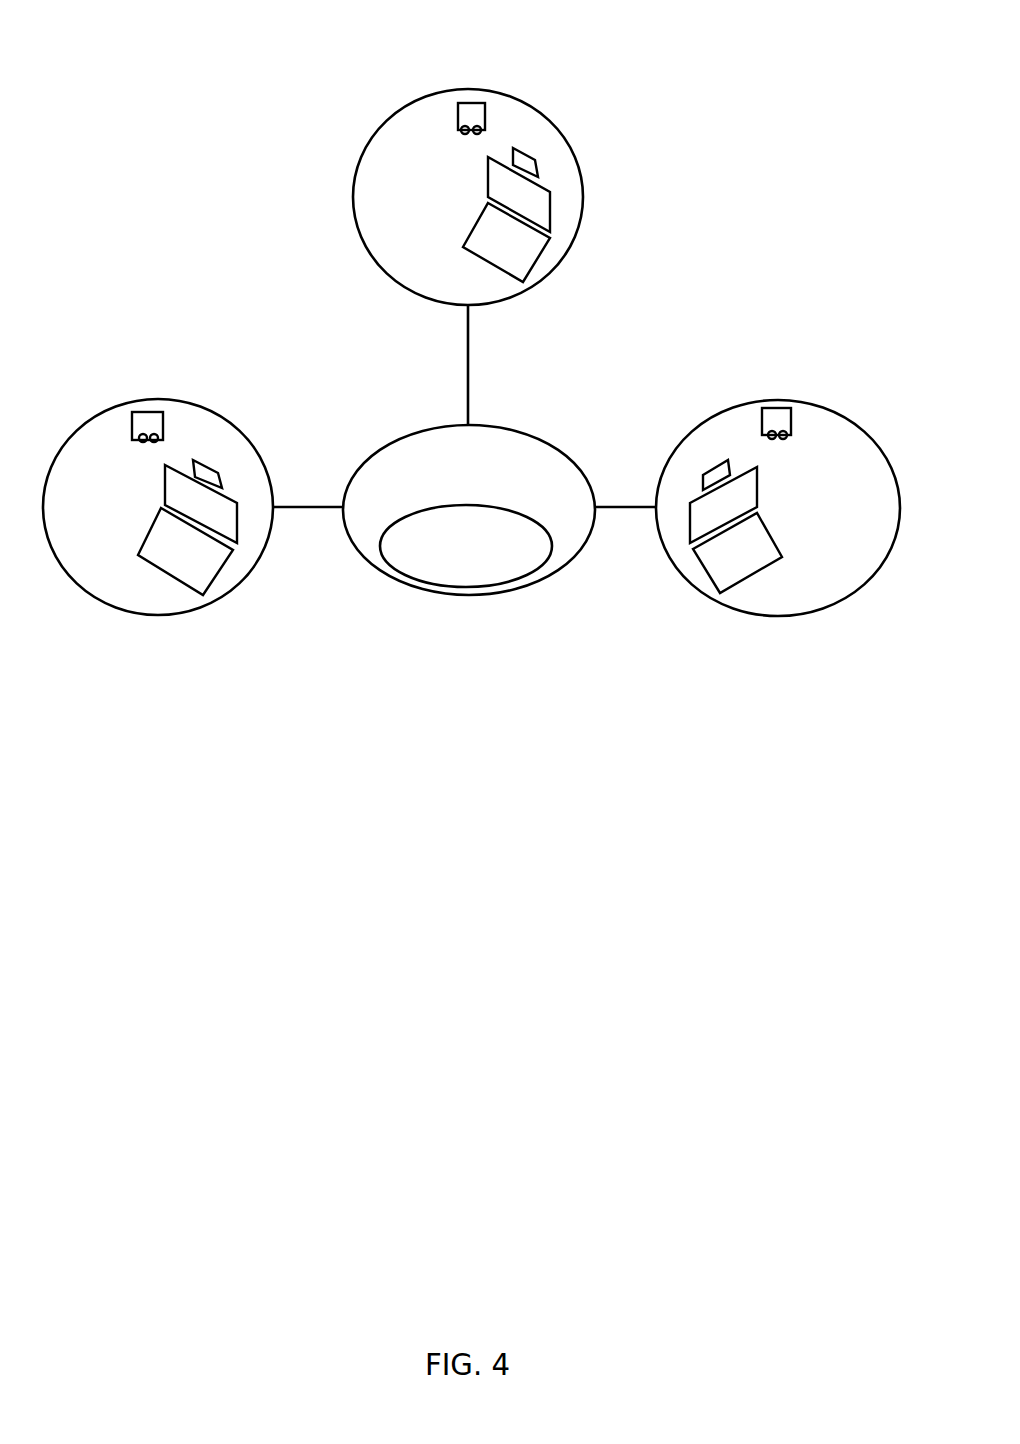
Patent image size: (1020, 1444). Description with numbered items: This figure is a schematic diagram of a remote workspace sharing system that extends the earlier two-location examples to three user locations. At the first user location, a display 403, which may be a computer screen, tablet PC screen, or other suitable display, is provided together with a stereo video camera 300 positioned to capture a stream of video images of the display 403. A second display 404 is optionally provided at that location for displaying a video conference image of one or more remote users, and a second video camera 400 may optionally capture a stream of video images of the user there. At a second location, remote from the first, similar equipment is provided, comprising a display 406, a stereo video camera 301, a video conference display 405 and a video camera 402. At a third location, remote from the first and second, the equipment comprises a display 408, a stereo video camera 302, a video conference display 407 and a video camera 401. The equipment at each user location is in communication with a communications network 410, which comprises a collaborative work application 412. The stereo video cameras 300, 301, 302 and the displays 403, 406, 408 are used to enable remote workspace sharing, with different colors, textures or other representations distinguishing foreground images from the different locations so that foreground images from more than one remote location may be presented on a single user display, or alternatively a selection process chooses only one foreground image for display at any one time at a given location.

The stereo video camera 300 is at (150, 425).
The stereo video camera 301 is at (778, 410).
The stereo video camera 302 is at (467, 110).
The video camera 400 is at (217, 467).
The video camera 401 is at (533, 163).
The video camera 402 is at (710, 470).
The display 403 is at (200, 573).
The second display 404 is at (227, 522).
The video conference display 405 is at (698, 517).
The display 406 is at (728, 567).
The video conference display 407 is at (530, 205).
The display 408 is at (520, 248).
The communications network 410 is at (418, 440).
The collaborative work application 412 is at (460, 577).